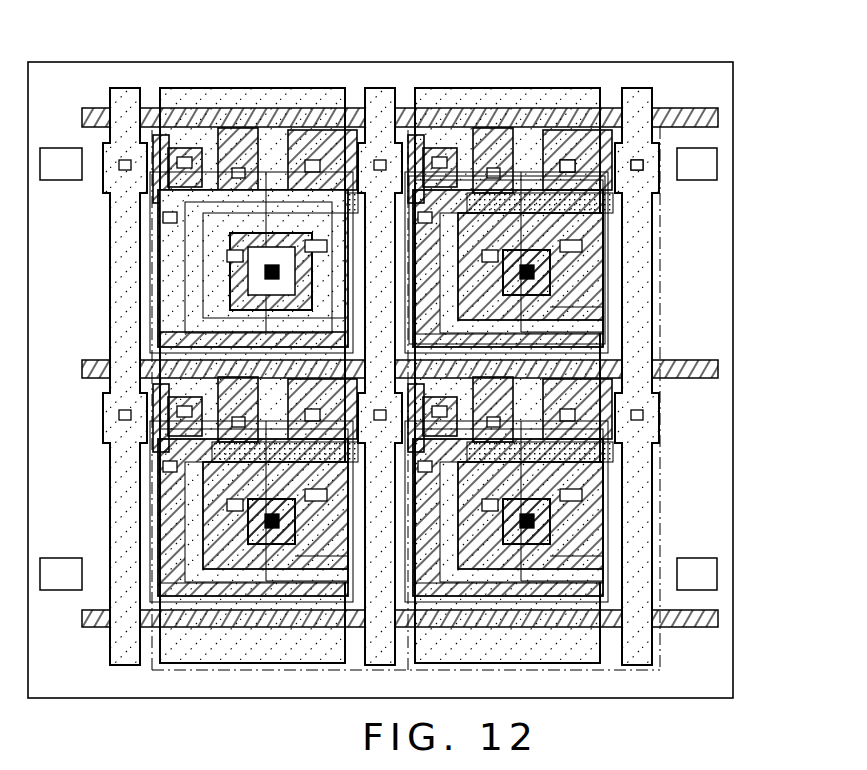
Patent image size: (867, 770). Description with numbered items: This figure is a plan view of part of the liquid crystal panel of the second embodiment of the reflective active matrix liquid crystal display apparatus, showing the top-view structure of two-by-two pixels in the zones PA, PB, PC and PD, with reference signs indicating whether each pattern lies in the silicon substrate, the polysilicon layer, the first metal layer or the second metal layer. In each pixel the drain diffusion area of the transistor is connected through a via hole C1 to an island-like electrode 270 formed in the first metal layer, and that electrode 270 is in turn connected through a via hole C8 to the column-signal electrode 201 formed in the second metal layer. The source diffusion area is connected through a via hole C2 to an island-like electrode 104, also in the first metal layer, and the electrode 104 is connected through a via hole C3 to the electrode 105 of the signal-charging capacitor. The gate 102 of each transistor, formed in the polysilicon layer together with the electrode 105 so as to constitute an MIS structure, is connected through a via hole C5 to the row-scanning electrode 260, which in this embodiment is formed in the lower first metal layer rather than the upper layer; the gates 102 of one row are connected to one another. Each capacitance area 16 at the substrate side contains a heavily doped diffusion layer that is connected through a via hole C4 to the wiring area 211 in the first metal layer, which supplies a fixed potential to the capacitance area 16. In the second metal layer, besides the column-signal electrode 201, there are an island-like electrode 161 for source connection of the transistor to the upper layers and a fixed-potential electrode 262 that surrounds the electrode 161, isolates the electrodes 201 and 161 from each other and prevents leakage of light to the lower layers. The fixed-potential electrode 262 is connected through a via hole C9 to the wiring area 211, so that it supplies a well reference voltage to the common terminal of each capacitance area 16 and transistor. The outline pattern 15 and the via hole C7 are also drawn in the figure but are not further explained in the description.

The fixed-potential electrode 262 is at (197, 87).
The wiring area 211 is at (410, 147).
The via hole C9 is at (439, 162).
The via hole C5 is at (493, 172).
The semiconductor layer (S) 15 is at (540, 24).
The via hole C1 is at (569, 162).
The island-like electrode 270 is at (608, 150).
The column-signal electrode 201 is at (642, 98).
The via hole C8 is at (640, 162).
The row-scanning electrode 260 is at (720, 118).
The gate 102 is at (612, 207).
The island-like electrode 104 is at (606, 268).
The capacitance area 16 is at (604, 314).
The electrode of signal-charging capacitor 105 is at (598, 328).
The island-like electrode 161 is at (262, 264).
The contact C7 is at (236, 278).
The via hole C4 is at (176, 218).
The via hole C3 is at (480, 272).
The via hole C2 is at (586, 239).
The pixel zone PA is at (61, 164).
The pixel zone PB is at (697, 164).
The pixel zone PC is at (61, 574).
The pixel zone PD is at (697, 574).